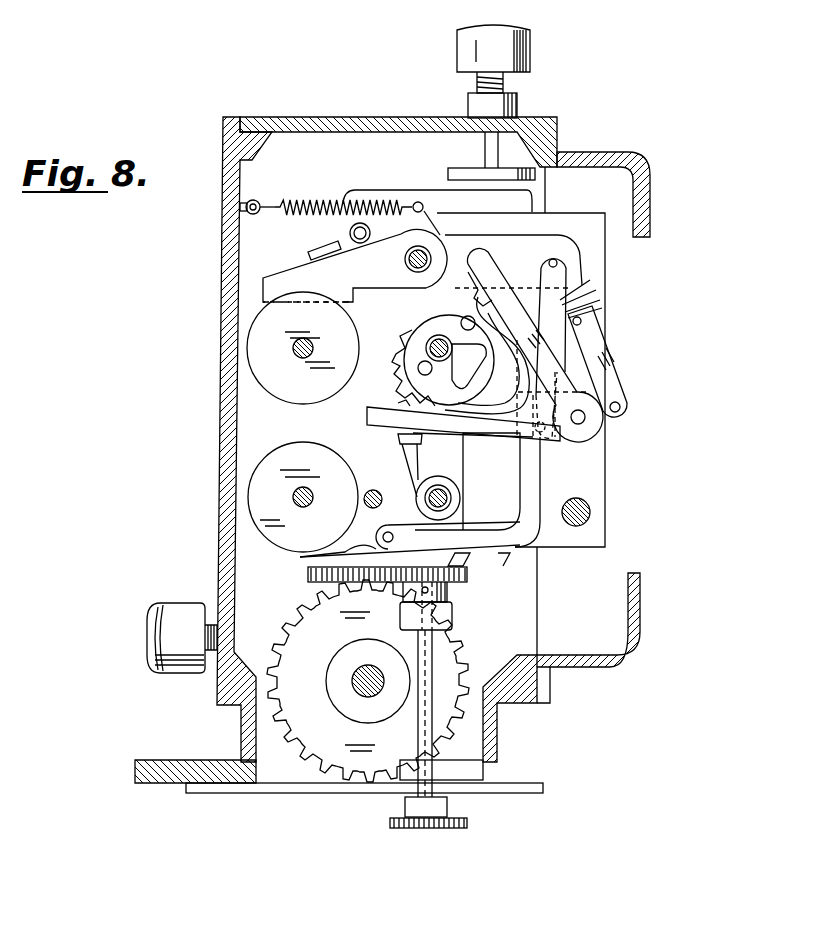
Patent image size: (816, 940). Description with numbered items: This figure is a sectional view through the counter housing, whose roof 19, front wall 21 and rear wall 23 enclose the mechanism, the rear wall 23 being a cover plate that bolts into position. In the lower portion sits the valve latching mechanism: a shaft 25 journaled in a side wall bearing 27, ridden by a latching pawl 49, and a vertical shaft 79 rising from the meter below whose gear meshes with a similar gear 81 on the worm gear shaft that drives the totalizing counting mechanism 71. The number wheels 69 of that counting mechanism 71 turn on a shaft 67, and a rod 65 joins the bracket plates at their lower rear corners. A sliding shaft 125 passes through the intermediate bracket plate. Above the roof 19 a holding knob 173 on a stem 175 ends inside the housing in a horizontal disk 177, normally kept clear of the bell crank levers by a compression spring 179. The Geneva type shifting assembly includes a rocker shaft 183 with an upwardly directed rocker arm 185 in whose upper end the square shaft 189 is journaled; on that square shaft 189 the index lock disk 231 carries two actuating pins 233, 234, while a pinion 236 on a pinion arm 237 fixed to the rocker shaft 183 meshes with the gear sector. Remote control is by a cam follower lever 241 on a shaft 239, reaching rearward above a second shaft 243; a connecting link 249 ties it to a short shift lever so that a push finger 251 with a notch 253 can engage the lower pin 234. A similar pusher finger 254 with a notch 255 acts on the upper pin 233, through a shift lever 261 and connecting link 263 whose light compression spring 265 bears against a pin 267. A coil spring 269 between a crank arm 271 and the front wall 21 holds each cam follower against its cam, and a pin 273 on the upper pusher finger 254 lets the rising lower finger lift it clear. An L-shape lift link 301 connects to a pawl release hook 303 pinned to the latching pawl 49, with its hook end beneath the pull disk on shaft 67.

The roof 19 is at (330, 117).
The front wall 21 is at (223, 281).
The rear wall 23 is at (652, 178).
The shaft 25 is at (352, 676).
The side wall bearing 27 is at (479, 558).
The latching pawl 49 is at (446, 552).
The rod 65 is at (592, 514).
The shaft 67 is at (293, 494).
The number wheels 69 is at (278, 452).
The counting mechanism 71 is at (310, 537).
The vertical shaft 79 is at (433, 690).
The gear 81 is at (340, 585).
The shaft 125 is at (295, 350).
The holding knob 173 is at (478, 26).
The stem 175 is at (506, 82).
The horizontal disk 177 is at (465, 168).
The compression spring 179 is at (470, 83).
The rocker shaft 183 is at (452, 500).
The rocker arm 185 is at (455, 465).
The square shaft 189 is at (430, 342).
The index lock disk 231 is at (398, 360).
The actuating pin 233 is at (463, 319).
The actuating pin 234 is at (430, 375).
The pinion 236 is at (403, 404).
The pinion arm 237 is at (410, 455).
The shaft 239 is at (405, 260).
The cam follower lever 241 is at (500, 243).
The second shaft 243 is at (581, 424).
The connecting link 249 is at (553, 327).
The push finger 251 is at (465, 433).
The notch 253 is at (420, 412).
The pusher finger 254 is at (508, 298).
The notch 255 is at (480, 292).
The shift lever 261 is at (620, 412).
The connecting link 263 is at (605, 360).
The compression spring 265 is at (595, 287).
The pin 267 is at (583, 321).
The coil spring 269 is at (335, 200).
The crank arm 271 is at (436, 194).
The pin 273 is at (530, 387).
The lift link 301 is at (527, 548).
The pawl release hook 303 is at (372, 541).